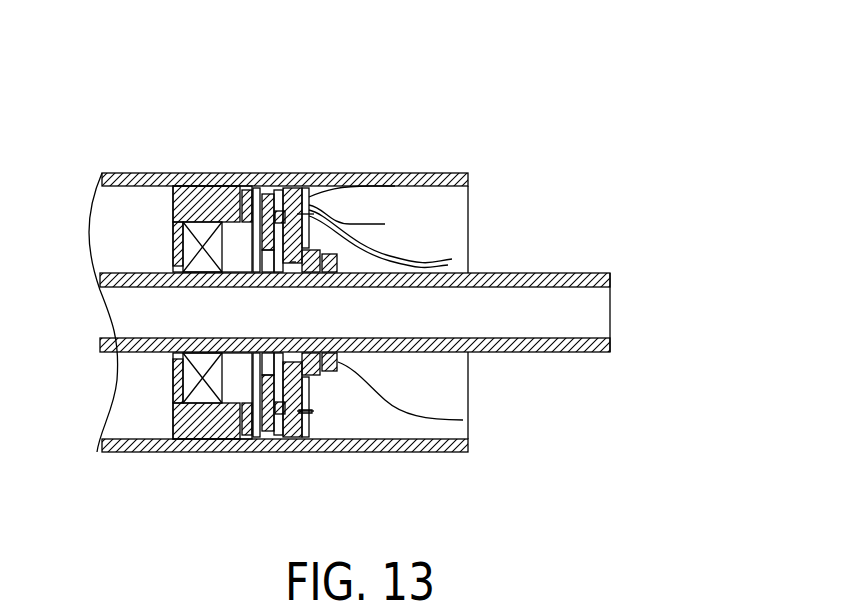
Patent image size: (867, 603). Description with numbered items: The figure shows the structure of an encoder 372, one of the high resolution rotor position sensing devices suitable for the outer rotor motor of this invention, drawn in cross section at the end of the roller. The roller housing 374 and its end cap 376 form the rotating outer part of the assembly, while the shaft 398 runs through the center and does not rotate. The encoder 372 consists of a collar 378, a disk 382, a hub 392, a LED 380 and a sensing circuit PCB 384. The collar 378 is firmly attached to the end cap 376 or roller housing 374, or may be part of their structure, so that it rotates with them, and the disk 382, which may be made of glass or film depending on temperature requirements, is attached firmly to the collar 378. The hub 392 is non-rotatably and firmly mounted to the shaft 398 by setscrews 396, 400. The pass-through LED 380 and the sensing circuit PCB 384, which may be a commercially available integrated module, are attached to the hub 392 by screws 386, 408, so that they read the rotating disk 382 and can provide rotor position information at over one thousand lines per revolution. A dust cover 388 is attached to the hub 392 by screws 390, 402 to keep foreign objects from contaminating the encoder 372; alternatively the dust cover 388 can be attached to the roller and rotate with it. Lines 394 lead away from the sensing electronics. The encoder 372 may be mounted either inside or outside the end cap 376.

The encoder 372 is at (584, 94).
The roller housing 374 is at (128, 172).
The end cap 376 is at (190, 176).
The collar 378 is at (223, 192).
The LED 380 is at (246, 192).
The disk 382 is at (268, 194).
The sensing circuit PCB 384 is at (285, 192).
The screw 386 is at (306, 190).
The dust cover 388 is at (374, 186).
The screw 390 is at (370, 224).
The hub 392 is at (293, 264).
The cable 394 is at (440, 251).
The setscrew 396 is at (325, 264).
The shaft 398 is at (610, 275).
The setscrew 400 is at (463, 420).
The screw 402 is at (312, 412).
The screw 408 is at (282, 416).